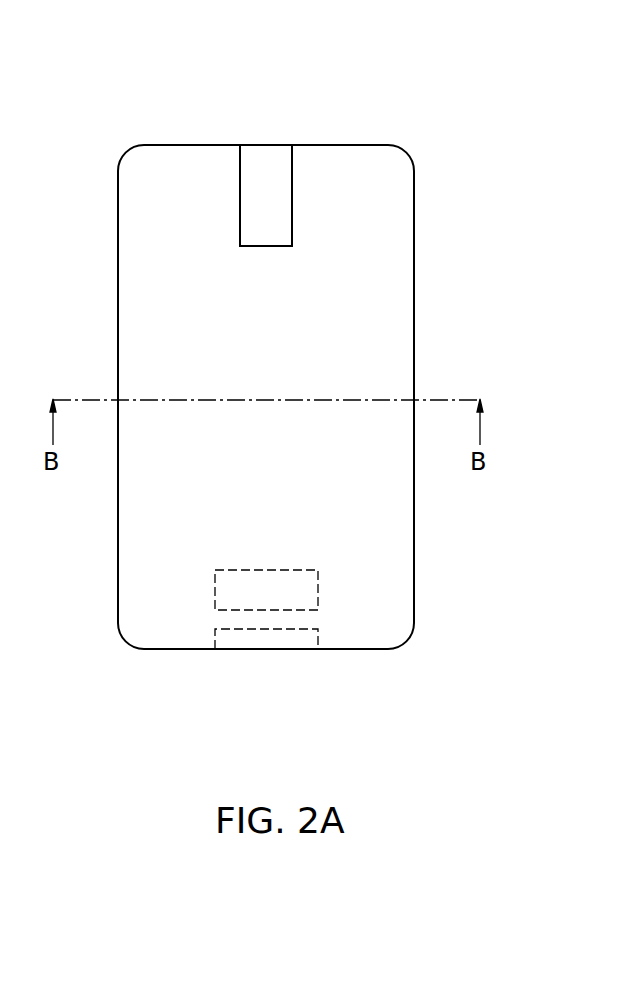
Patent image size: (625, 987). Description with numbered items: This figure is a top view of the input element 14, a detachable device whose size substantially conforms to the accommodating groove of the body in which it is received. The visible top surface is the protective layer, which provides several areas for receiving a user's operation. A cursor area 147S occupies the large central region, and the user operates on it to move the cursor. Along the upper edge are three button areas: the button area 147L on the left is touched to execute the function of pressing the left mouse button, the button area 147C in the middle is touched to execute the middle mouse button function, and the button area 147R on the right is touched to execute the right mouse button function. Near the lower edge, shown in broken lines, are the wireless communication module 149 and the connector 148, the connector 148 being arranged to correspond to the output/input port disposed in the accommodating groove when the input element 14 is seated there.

The input element 14 is at (60, 28).
The button area 147L is at (182, 195).
The button area 147C is at (267, 195).
The button area 147R is at (347, 195).
The cursor area 147S is at (342, 333).
The connector 148 is at (263, 638).
The wireless communication module 149 is at (308, 589).